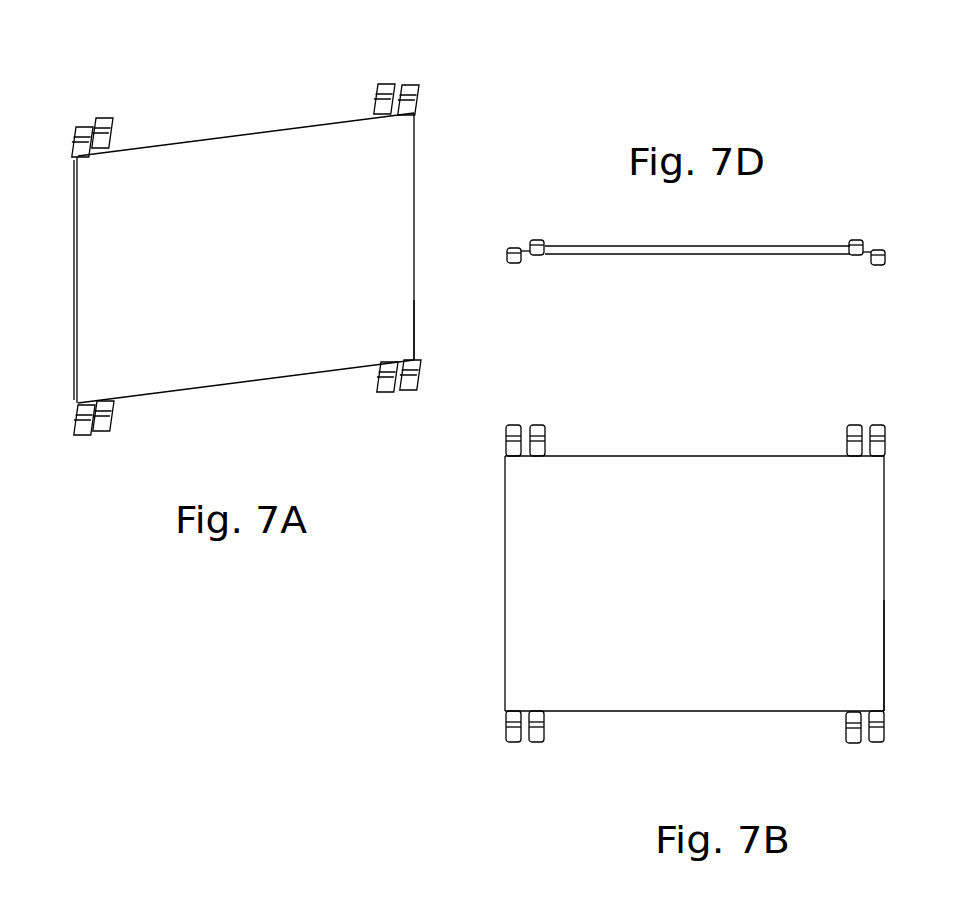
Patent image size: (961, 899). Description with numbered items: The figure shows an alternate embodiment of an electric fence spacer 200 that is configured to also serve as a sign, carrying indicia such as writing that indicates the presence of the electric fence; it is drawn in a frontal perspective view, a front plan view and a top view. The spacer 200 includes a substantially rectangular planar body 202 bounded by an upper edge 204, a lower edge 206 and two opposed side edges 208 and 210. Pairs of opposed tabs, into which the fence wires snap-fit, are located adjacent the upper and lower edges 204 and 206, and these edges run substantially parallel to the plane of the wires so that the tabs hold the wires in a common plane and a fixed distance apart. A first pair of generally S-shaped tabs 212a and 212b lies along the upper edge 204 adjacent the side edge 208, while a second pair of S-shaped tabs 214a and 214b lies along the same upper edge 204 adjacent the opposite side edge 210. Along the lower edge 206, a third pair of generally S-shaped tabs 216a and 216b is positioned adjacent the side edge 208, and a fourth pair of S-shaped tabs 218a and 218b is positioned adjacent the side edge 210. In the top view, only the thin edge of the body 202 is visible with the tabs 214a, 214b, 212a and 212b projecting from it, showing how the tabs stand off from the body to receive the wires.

In FIG. 7A, the spacer 200 is at (286, 90).
In FIG. 7B, the spacer 200 is at (740, 410).
In FIG. 7A, the planar body 202 is at (415, 148).
In FIG. 7B, the planar body 202 is at (886, 498).
In FIG. 7A, the upper edge 204 is at (235, 136).
In FIG. 7B, the upper edge 204 is at (640, 455).
In FIG. 7A, the lower edge 206 is at (210, 392).
In FIG. 7B, the lower edge 206 is at (715, 713).
In FIG. 7A, the side edge 208 is at (416, 327).
In FIG. 7B, the side edge 208 is at (886, 660).
In FIG. 7A, the side edge 210 is at (76, 348).
In FIG. 7B, the side edge 210 is at (505, 600).
In FIG. 7A, the S-shaped tab 212a is at (378, 82).
In FIG. 7D, the S-shaped tab 212a is at (855, 240).
In FIG. 7B, the S-shaped tab 212a is at (855, 424).
In FIG. 7A, the S-shaped tab 212b is at (412, 84).
In FIG. 7D, the S-shaped tab 212b is at (880, 267).
In FIG. 7B, the S-shaped tab 212b is at (880, 425).
In FIG. 7A, the S-shaped tab 214a is at (88, 122).
In FIG. 7D, the S-shaped tab 214a is at (513, 265).
In FIG. 7B, the S-shaped tab 214a is at (512, 424).
In FIG. 7A, the S-shaped tab 214b is at (108, 122).
In FIG. 7D, the S-shaped tab 214b is at (543, 240).
In FIG. 7B, the S-shaped tab 214b is at (540, 425).
In FIG. 7A, the S-shaped tab 216a is at (380, 393).
In FIG. 7B, the S-shaped tab 216a is at (851, 744).
In FIG. 7A, the S-shaped tab 216b is at (410, 396).
In FIG. 7B, the S-shaped tab 216b is at (876, 744).
In FIG. 7A, the S-shaped tab 218a is at (106, 430).
In FIG. 7B, the S-shaped tab 218a is at (538, 744).
In FIG. 7A, the S-shaped tab 218b is at (82, 440).
In FIG. 7B, the S-shaped tab 218b is at (512, 743).